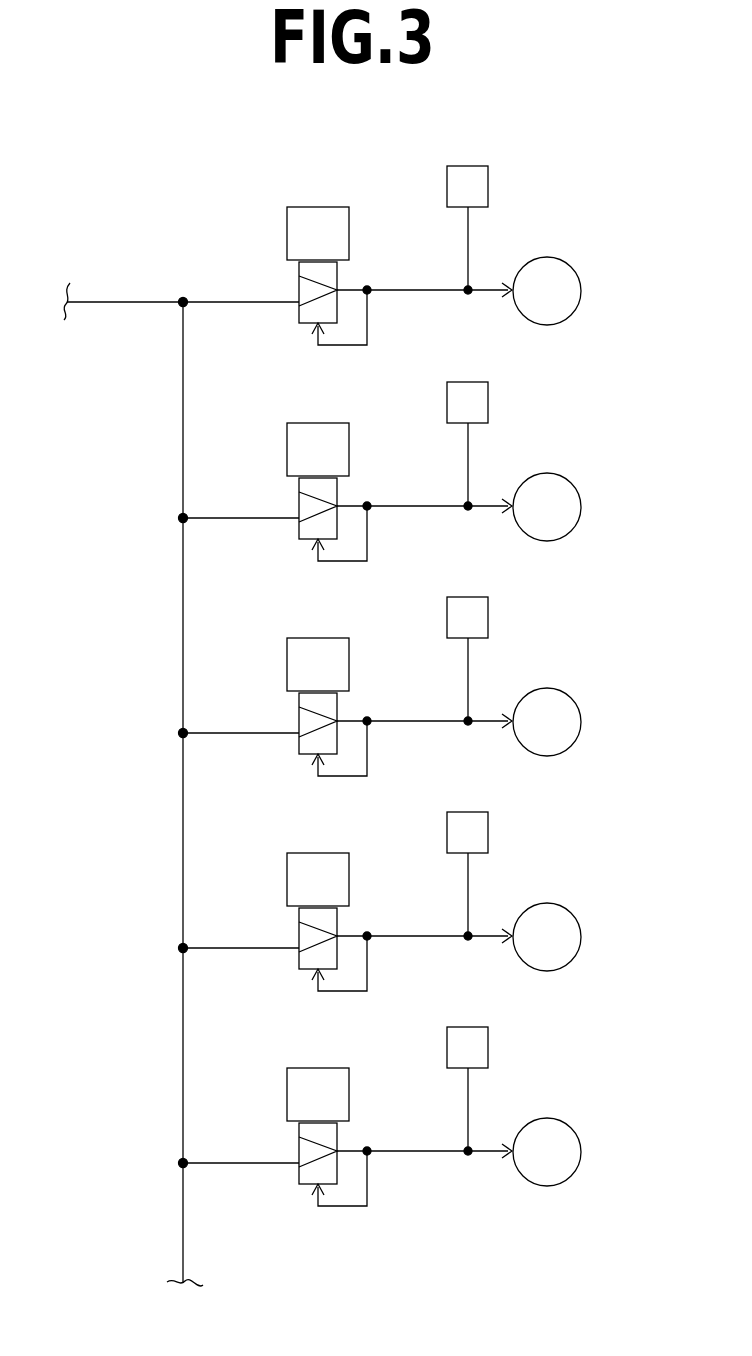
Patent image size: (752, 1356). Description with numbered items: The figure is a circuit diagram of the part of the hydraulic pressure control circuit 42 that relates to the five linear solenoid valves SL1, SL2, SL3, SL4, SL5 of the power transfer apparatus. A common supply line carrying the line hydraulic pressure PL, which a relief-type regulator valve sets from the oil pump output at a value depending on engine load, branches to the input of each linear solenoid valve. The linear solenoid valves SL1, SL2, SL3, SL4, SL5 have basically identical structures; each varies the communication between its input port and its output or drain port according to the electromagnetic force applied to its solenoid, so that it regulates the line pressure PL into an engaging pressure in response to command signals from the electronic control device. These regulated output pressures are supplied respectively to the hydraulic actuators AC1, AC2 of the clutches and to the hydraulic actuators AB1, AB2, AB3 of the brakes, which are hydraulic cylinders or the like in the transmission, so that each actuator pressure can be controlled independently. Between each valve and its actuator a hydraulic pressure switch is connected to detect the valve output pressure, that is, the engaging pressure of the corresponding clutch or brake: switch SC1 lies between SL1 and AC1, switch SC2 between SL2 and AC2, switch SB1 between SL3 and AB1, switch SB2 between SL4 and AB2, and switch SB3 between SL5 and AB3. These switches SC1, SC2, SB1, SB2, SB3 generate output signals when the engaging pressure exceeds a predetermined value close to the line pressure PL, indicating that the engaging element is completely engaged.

The hydraulic pressure control circuit 42 is at (124, 95).
The line hydraulic pressure PL is at (133, 772).
The linear solenoid valve SL1 is at (344, 276).
The linear solenoid valve SL2 is at (344, 492).
The linear solenoid valve SL3 is at (344, 707).
The linear solenoid valve SL4 is at (344, 922).
The linear solenoid valve SL5 is at (344, 1137).
The hydraulic pressure switch SC1 is at (475, 178).
The hydraulic pressure switch SC2 is at (475, 394).
The hydraulic pressure switch SB1 is at (475, 609).
The hydraulic pressure switch SB2 is at (475, 824).
The hydraulic pressure switch SB3 is at (475, 1039).
The hydraulic actuator AC1 is at (548, 266).
The hydraulic actuator AC2 is at (548, 482).
The hydraulic actuator AB1 is at (548, 697).
The hydraulic actuator AB2 is at (548, 912).
The hydraulic actuator AB3 is at (548, 1127).